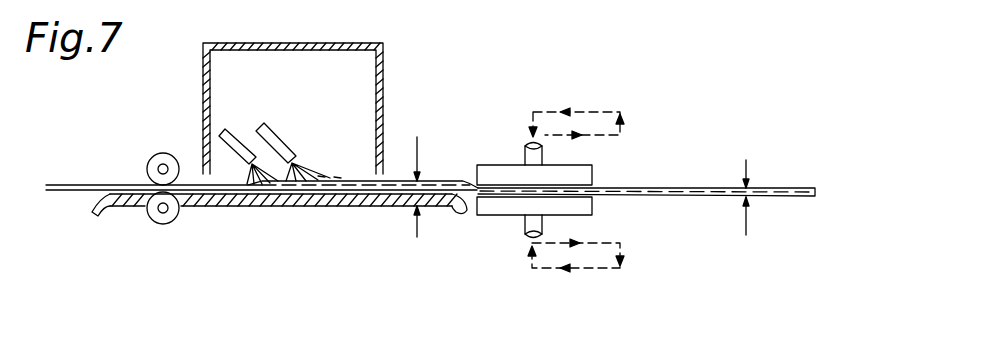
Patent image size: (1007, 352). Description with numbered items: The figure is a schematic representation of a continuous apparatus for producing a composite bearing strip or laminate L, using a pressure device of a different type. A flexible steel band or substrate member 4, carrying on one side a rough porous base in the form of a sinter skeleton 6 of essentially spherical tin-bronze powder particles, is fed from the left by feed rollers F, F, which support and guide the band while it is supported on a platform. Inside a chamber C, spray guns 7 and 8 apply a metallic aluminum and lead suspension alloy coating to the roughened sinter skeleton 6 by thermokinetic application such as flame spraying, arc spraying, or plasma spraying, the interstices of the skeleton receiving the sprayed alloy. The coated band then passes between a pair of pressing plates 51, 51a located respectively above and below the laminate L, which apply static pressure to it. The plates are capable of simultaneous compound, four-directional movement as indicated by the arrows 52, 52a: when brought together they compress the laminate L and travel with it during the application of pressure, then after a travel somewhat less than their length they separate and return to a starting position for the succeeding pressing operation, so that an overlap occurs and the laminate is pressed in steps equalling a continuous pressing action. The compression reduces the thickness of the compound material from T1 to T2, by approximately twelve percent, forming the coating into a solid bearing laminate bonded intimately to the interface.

The flexible steel band 4 is at (63, 195).
The sinter skeleton 6 is at (92, 182).
The spray gun 7 is at (233, 137).
The spray gun 8 is at (277, 145).
The spray chamber C is at (383, 63).
The feed rollers F is at (163, 152).
The composite bearing strip L is at (435, 180).
The thickness before pressing T1 is at (413, 242).
The thickness after pressing T2 is at (741, 217).
The pressing plate 51 is at (588, 175).
The pressing plate 51a is at (592, 208).
The movement arrows 52 is at (588, 108).
The movement arrows 52a is at (574, 269).